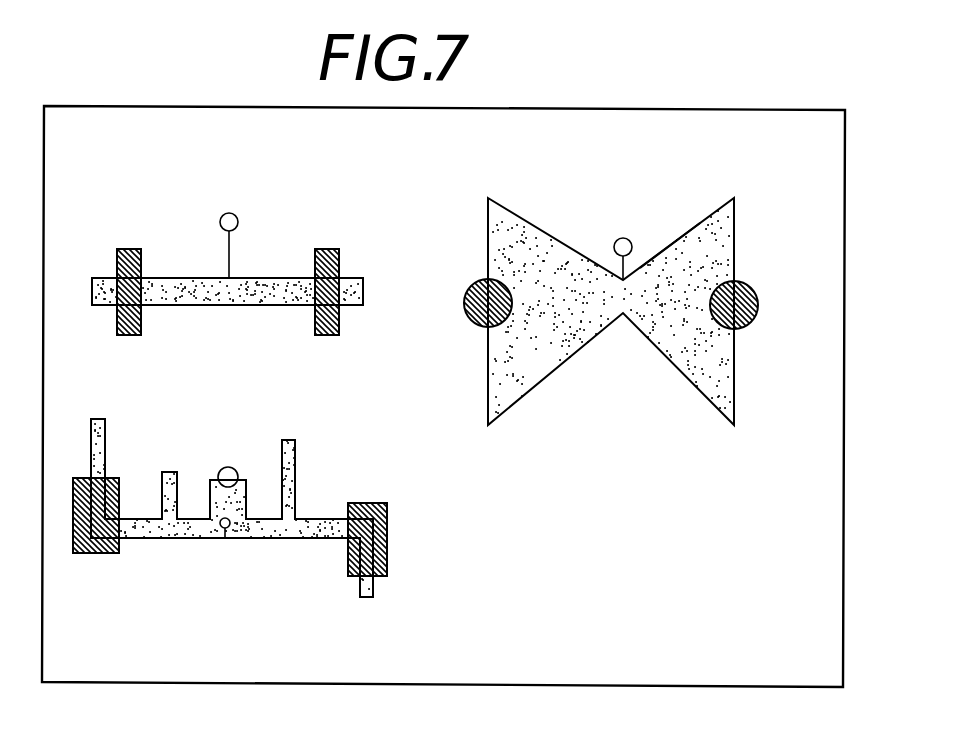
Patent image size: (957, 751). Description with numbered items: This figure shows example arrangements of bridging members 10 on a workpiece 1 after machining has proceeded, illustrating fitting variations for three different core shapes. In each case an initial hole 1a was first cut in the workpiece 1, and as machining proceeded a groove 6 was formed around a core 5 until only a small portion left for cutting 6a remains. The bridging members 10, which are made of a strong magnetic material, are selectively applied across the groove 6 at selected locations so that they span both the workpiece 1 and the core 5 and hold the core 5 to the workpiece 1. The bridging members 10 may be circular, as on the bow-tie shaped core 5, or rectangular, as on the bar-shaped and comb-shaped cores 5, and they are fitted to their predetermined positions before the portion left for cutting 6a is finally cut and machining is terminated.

The workpiece 1 is at (827, 215).
The initial hole 1a is at (229, 213).
The core 5 is at (177, 305).
The groove 6 is at (253, 305).
The portion left for cutting 6a is at (279, 278).
The bridging member 10 is at (128, 249).